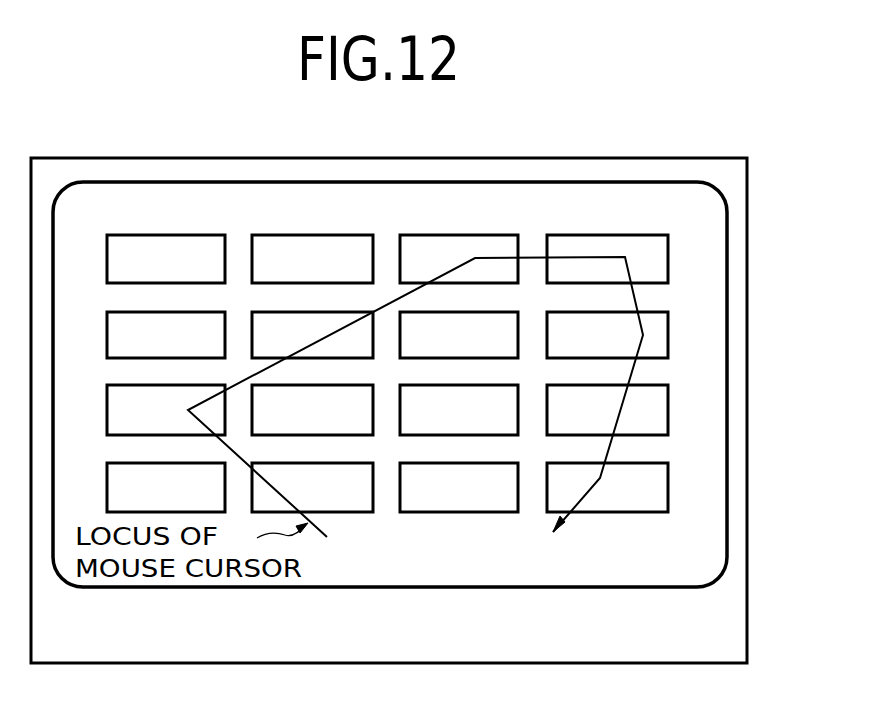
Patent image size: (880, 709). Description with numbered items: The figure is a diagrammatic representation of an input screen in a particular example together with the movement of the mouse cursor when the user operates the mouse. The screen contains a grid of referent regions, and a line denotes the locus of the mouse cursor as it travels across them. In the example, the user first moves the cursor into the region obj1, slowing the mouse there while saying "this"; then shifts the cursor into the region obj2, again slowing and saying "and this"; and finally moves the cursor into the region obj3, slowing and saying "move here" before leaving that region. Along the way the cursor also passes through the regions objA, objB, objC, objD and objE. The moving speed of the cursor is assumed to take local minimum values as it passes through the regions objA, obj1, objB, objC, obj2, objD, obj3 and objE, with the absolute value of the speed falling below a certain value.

The obj1 region obj1 is at (166, 410).
The obj2 region obj2 is at (607, 259).
The obj3 region obj3 is at (607, 410).
The objA region objA is at (312, 487).
The objB region objB is at (312, 335).
The objC region objC is at (459, 259).
The objD region objD is at (607, 335).
The objE region objE is at (607, 487).